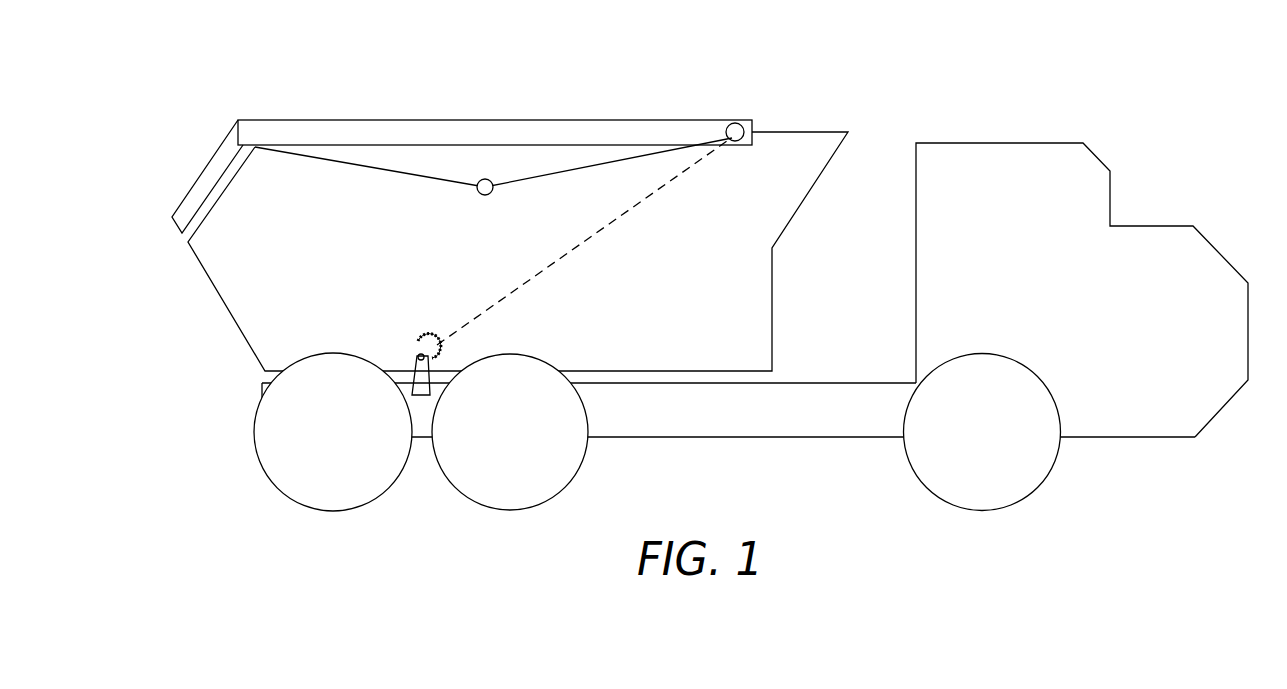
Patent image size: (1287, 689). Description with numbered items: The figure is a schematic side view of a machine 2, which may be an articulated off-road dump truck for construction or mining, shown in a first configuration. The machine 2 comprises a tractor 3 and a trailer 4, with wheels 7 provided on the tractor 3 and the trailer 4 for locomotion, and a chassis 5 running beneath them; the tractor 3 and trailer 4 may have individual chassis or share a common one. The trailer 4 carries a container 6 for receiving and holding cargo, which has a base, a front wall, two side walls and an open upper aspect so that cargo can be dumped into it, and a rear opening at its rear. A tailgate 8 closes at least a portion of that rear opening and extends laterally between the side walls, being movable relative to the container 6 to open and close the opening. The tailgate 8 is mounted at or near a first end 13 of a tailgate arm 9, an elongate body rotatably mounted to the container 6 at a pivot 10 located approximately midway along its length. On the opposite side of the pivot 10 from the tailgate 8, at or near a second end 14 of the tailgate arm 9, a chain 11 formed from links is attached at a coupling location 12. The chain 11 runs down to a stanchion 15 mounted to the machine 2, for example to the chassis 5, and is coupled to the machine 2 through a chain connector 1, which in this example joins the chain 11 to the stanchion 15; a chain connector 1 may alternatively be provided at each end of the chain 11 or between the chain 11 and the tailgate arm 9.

The chain connector 1 is at (568, 279).
The machine 2 is at (699, 286).
The tractor 3 is at (1203, 396).
The trailer 4 is at (499, 241).
The chassis 5 is at (788, 432).
The container 6 is at (228, 296).
The wheels 7 is at (334, 507).
The tailgate 8 is at (195, 192).
The tailgate arm 9 is at (349, 128).
The pivot 10 is at (486, 196).
The chain 11 is at (593, 244).
The coupling location 12 is at (737, 141).
The first end 13 is at (258, 118).
The second end 14 is at (693, 118).
The stanchion 15 is at (428, 389).